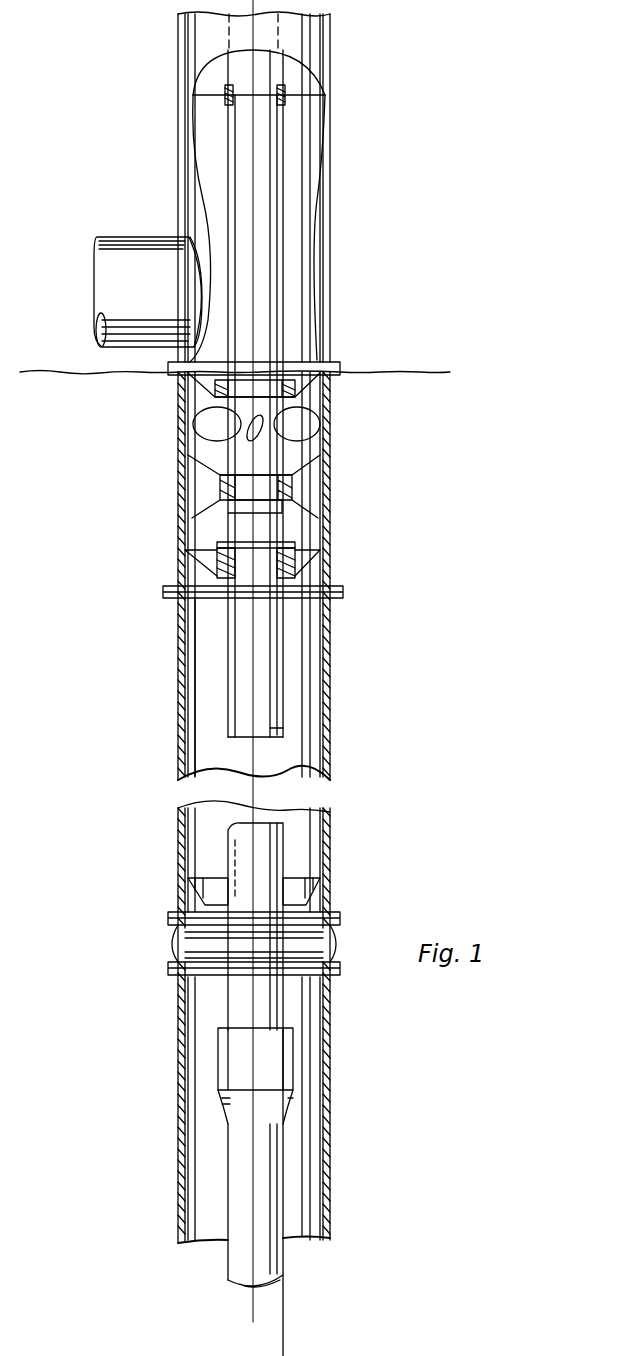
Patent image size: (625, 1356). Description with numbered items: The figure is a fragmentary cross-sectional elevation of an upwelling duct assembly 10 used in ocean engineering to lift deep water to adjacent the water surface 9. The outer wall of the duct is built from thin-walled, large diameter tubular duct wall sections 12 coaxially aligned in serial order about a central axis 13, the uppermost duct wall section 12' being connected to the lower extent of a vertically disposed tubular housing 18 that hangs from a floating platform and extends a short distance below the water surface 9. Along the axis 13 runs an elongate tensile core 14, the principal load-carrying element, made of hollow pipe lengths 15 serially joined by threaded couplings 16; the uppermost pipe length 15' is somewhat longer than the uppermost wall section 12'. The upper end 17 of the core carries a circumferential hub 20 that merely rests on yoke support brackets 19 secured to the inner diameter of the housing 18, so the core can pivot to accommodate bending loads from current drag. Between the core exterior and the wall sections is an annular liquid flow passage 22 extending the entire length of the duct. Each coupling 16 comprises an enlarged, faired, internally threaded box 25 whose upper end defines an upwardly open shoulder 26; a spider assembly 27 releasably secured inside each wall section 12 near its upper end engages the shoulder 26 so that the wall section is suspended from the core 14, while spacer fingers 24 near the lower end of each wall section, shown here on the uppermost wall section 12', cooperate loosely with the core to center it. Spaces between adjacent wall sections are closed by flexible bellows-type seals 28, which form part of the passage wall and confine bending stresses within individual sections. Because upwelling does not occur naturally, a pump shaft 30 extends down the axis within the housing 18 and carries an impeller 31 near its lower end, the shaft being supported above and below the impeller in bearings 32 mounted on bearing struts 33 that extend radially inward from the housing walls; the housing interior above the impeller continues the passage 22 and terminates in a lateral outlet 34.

The water surface 9 is at (434, 372).
The duct assembly 10 is at (124, 724).
The duct wall section 12 is at (287, 1022).
The uppermost duct wall section 12' is at (288, 576).
The central axis 13 is at (258, 1290).
The tensile core 14 is at (245, 736).
The pipe length 15 is at (200, 1202).
The uppermost pipe length 15' is at (202, 1089).
The threaded coupling 16 is at (240, 1050).
The upper end of core 17 is at (192, 564).
The tubular housing 18 is at (332, 223).
The yoke support bracket 19 is at (320, 582).
The circumferential hub 20 is at (296, 550).
The annular liquid flow passage 22 is at (180, 676).
The spacer finger 24 is at (195, 890).
The internally threaded box 25 is at (290, 1070).
The shoulder 26 is at (218, 1024).
The spider assembly 27 is at (308, 1016).
The bellows-type seal 28 is at (180, 939).
The pump shaft 30 is at (281, 146).
The impeller 31 is at (198, 422).
The bearing 32 is at (295, 384).
The bearing strut 33 is at (318, 428).
The lateral outlet 34 is at (120, 255).